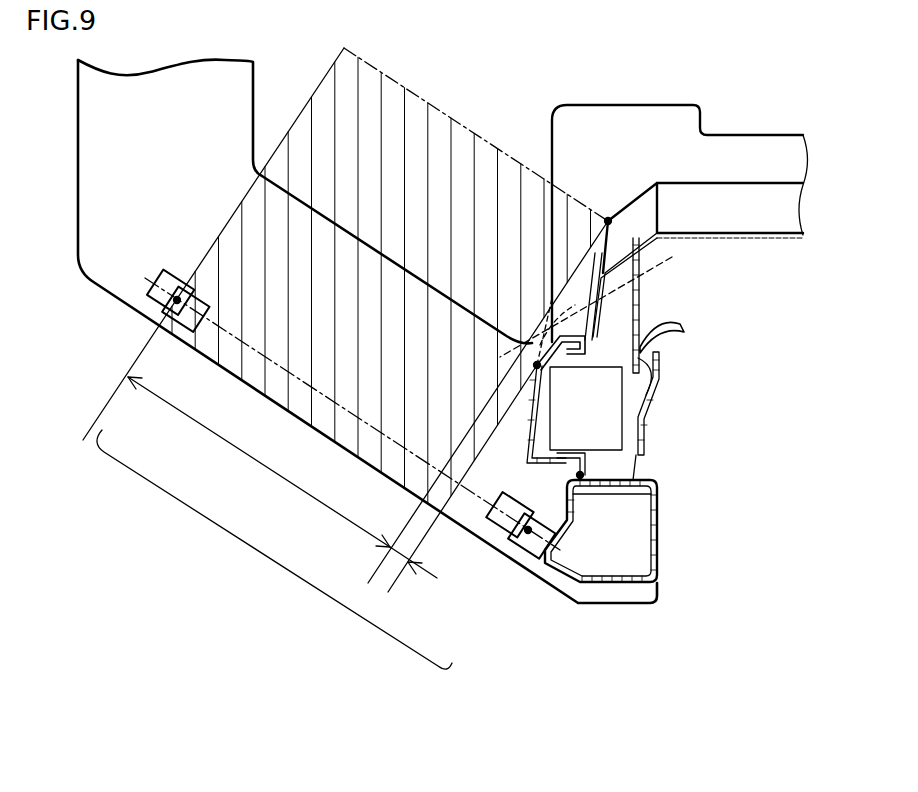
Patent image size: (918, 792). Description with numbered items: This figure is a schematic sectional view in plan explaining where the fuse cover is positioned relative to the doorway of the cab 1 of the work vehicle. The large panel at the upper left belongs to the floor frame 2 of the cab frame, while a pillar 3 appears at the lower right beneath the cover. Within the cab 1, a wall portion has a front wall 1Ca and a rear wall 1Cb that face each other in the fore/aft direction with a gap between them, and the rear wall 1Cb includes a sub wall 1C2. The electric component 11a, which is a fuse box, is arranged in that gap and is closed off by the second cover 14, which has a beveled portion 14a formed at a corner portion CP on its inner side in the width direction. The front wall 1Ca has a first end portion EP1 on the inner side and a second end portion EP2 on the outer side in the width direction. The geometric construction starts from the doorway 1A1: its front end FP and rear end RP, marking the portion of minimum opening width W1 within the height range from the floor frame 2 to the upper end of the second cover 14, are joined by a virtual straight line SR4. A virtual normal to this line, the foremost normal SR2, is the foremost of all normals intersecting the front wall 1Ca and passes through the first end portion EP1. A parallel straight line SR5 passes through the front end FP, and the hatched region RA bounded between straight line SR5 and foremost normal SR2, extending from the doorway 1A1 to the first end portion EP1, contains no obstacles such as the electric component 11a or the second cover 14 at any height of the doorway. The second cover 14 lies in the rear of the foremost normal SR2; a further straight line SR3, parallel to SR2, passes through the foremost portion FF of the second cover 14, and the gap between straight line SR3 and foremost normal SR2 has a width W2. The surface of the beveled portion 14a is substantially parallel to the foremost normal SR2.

The cab 1 is at (758, 298).
The floor frame 2 is at (193, 227).
The pillar 3 is at (633, 588).
The second cover 14 is at (568, 498).
The beveled portion 14a is at (585, 357).
The electric component 11a is at (600, 430).
The doorway (opening) 1A1 is at (274, 549).
The sub wall 1C2 is at (647, 418).
The front wall 1Ca is at (601, 302).
The rear wall 1Cb is at (636, 317).
The region RA is at (392, 155).
The first end portion EP1 is at (608, 220).
The second end portion EP2 is at (583, 475).
The corner portion CP is at (601, 307).
The foremost portion FF is at (552, 370).
The front end FP is at (176, 300).
The rear end RP is at (529, 534).
The foremost normal SR2 is at (374, 567).
The straight line SR3 is at (393, 580).
The straight line SR4 is at (281, 371).
The straight line SR5 is at (107, 404).
The minimum opening width W1 is at (259, 462).
The width W2 is at (424, 560).